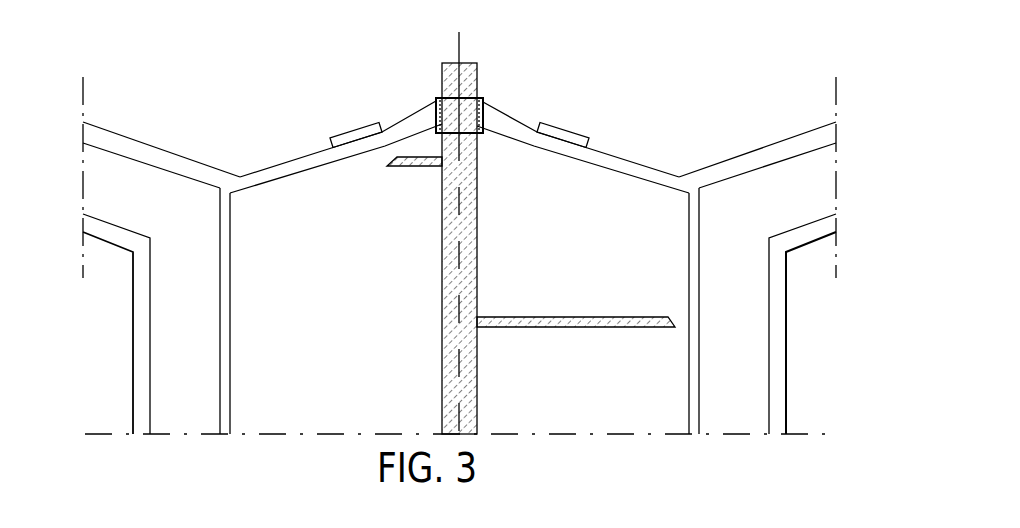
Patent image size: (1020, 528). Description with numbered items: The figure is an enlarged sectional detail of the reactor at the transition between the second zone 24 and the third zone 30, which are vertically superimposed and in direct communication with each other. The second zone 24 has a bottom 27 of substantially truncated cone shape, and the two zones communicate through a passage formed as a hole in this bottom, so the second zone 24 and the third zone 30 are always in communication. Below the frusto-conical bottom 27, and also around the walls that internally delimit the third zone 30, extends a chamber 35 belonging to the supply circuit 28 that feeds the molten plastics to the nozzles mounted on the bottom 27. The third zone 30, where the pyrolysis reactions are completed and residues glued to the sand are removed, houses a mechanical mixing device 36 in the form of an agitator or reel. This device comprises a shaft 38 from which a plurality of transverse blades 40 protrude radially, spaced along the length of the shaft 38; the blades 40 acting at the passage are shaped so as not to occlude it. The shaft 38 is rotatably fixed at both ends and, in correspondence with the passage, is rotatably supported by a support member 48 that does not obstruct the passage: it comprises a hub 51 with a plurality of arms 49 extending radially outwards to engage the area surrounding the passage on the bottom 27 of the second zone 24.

The second zone 24 is at (459, 112).
The bottom 27 is at (147, 152).
The supply circuit 28 is at (173, 407).
The third zone 30 is at (353, 301).
The chamber 35 is at (180, 340).
The mechanical mixing device 36 is at (441, 162).
The shaft 38 is at (458, 68).
The blades 40 is at (593, 315).
The support member 48 is at (496, 106).
The arms 49 is at (415, 115).
The hub 51 is at (482, 100).